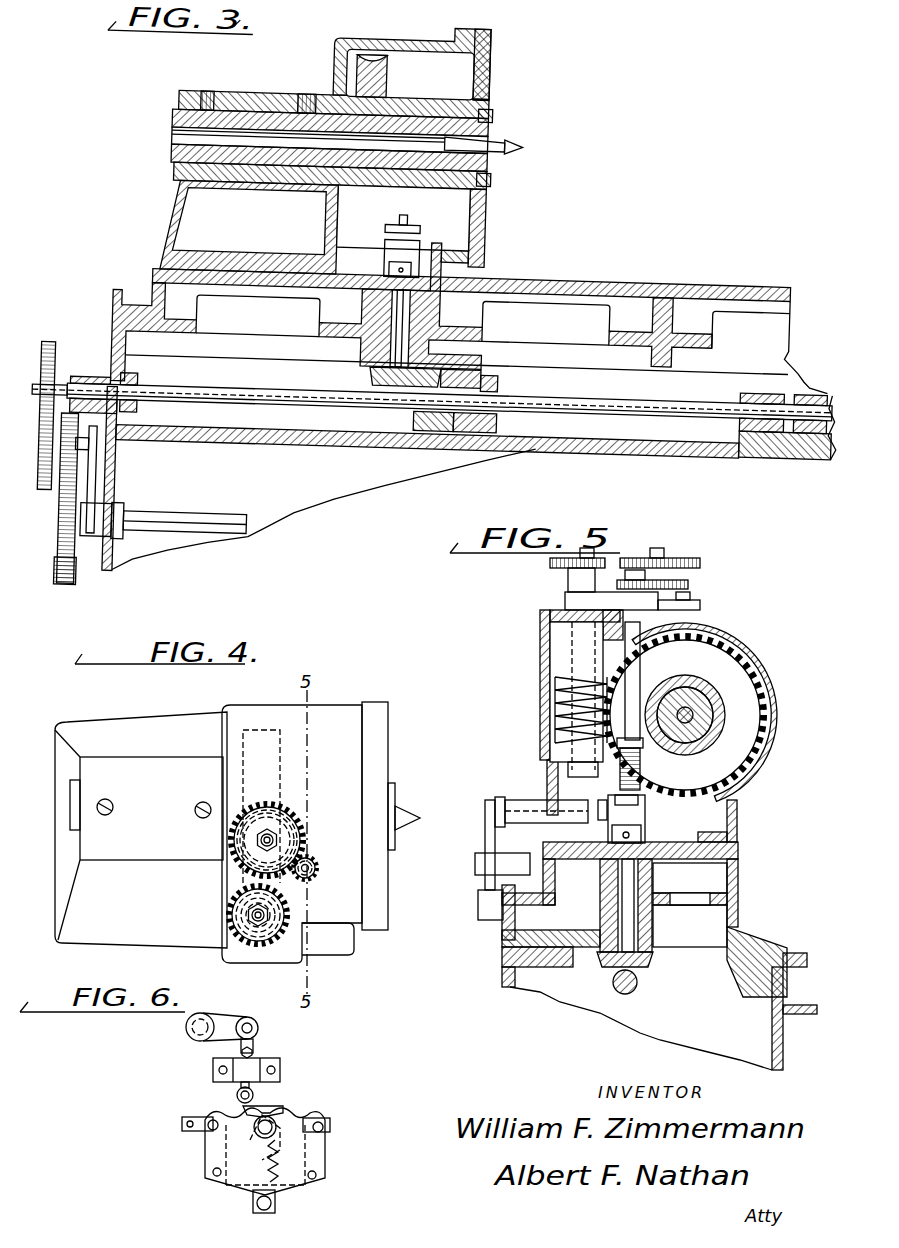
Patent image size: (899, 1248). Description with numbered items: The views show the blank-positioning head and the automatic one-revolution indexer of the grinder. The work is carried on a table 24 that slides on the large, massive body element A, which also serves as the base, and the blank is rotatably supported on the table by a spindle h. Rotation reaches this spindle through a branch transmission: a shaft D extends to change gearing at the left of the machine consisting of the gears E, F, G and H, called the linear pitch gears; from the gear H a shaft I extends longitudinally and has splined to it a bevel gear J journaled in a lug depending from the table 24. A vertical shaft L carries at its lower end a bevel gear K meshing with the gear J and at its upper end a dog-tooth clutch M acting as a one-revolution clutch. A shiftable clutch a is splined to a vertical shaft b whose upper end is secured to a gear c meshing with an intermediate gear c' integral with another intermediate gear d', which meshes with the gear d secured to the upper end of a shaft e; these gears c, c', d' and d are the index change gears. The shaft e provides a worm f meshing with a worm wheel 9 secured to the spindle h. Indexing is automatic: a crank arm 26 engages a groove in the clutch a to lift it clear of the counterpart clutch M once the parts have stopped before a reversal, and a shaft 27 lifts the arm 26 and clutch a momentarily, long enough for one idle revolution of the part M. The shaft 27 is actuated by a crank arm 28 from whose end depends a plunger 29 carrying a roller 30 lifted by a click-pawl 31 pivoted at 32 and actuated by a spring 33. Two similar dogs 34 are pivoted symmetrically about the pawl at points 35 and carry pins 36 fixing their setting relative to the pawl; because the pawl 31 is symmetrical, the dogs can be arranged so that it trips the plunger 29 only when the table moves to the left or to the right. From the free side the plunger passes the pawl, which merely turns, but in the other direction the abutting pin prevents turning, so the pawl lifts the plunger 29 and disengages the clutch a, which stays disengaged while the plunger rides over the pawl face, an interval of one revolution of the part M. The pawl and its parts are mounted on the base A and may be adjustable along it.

In FIG. 3, the clutch a is at (383, 242).
In FIG. 5, the clutch a is at (645, 814).
In FIG. 3, the vertical shaft b is at (403, 213).
In FIG. 5, the vertical shaft b is at (640, 660).
In FIG. 4, the gear c is at (318, 868).
In FIG. 5, the gear c is at (632, 601).
In FIG. 4, the intermediate gear c' is at (291, 840).
In FIG. 5, the intermediate gear c' is at (665, 584).
In FIG. 4, the gear d is at (273, 915).
In FIG. 4, the intermediate gear d' is at (279, 835).
In FIG. 5, the intermediate gear d' is at (630, 571).
In FIG. 5, the shaft e is at (583, 782).
In FIG. 4, the worm f is at (245, 900).
In FIG. 5, the worm f is at (555, 704).
In FIG. 3, the worm wheel 9 is at (380, 71).
In FIG. 4, the worm wheel 9 is at (262, 740).
In FIG. 5, the worm wheel 9 is at (762, 662).
In FIG. 3, the spindle h is at (483, 86).
In FIG. 4, the spindle h is at (396, 798).
In FIG. 5, the spindle h is at (722, 713).
In FIG. 3, the body element A is at (760, 446).
In FIG. 5, the body element A is at (797, 958).
In FIG. 3, the shaft D is at (250, 538).
In FIG. 3, the linear pitch gear E is at (80, 592).
In FIG. 3, the linear pitch gear F is at (82, 451).
In FIG. 3, the linear pitch gear G is at (52, 497).
In FIG. 3, the linear pitch gear H is at (50, 353).
In FIG. 3, the shaft I is at (244, 403).
In FIG. 5, the shaft I is at (631, 991).
In FIG. 3, the bevel gear J is at (420, 416).
In FIG. 3, the bevel gear K is at (374, 375).
In FIG. 5, the bevel gear K is at (653, 959).
In FIG. 3, the vertical shaft L is at (392, 302).
In FIG. 3, the dog-tooth clutch M is at (388, 267).
In FIG. 5, the dog-tooth clutch M is at (645, 835).
In FIG. 3, the table 24 is at (612, 270).
In FIG. 5, the table 24 is at (776, 936).
In FIG. 5, the crank arm 26 is at (499, 800).
In FIG. 5, the shaft 27 is at (526, 806).
In FIG. 6, the shaft 27 is at (190, 1034).
In FIG. 6, the crank arm 28 is at (228, 1018).
In FIG. 5, the plunger 29 is at (485, 835).
In FIG. 6, the plunger 29 is at (253, 1042).
In FIG. 5, the roller 30 is at (490, 880).
In FIG. 6, the roller 30 is at (246, 1082).
In FIG. 5, the click-pawl 31 is at (485, 900).
In FIG. 6, the click-pawl 31 is at (270, 1108).
In FIG. 6, the pivot 32 is at (260, 1138).
In FIG. 6, the spring 33 is at (278, 1158).
In FIG. 6, the dogs 34 is at (190, 1117).
In FIG. 6, the pivot points 35 is at (210, 1130).
In FIG. 6, the pins 36 is at (186, 1125).